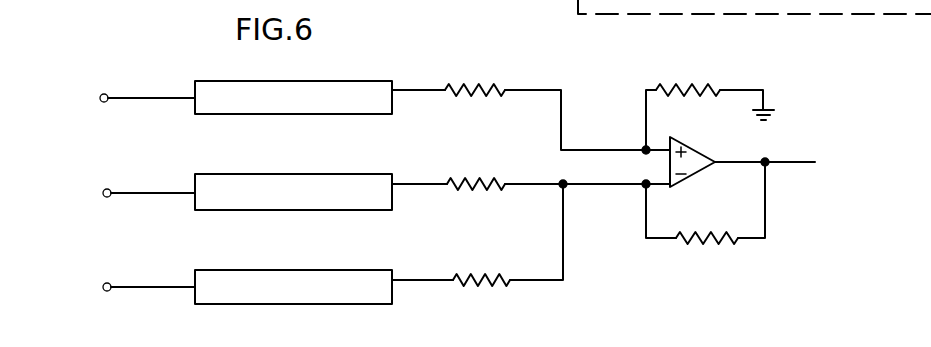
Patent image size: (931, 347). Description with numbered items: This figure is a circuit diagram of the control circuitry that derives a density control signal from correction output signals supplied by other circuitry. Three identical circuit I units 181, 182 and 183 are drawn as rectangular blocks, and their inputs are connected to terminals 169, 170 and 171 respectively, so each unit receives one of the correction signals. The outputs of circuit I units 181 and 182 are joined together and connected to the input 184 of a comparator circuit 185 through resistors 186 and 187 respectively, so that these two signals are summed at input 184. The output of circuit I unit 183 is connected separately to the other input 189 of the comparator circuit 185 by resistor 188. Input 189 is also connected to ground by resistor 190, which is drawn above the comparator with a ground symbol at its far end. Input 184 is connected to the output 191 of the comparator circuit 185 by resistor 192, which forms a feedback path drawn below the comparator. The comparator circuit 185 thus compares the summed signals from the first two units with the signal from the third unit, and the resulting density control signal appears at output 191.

The terminal 169 is at (104, 188).
The terminal 170 is at (103, 283).
The terminal 171 is at (100, 90).
The circuit I unit 181 is at (344, 174).
The circuit I unit 182 is at (340, 270).
The circuit I unit 183 is at (360, 81).
The input of comparator circuit 184 is at (643, 187).
The comparator circuit 185 is at (672, 144).
The resistor 186 is at (456, 183).
The resistor 187 is at (467, 279).
The resistor 188 is at (478, 89).
The input of comparator circuit 189 is at (641, 146).
The resistor 190 is at (690, 88).
The output of comparator circuit 191 is at (770, 160).
The resistor 192 is at (688, 241).